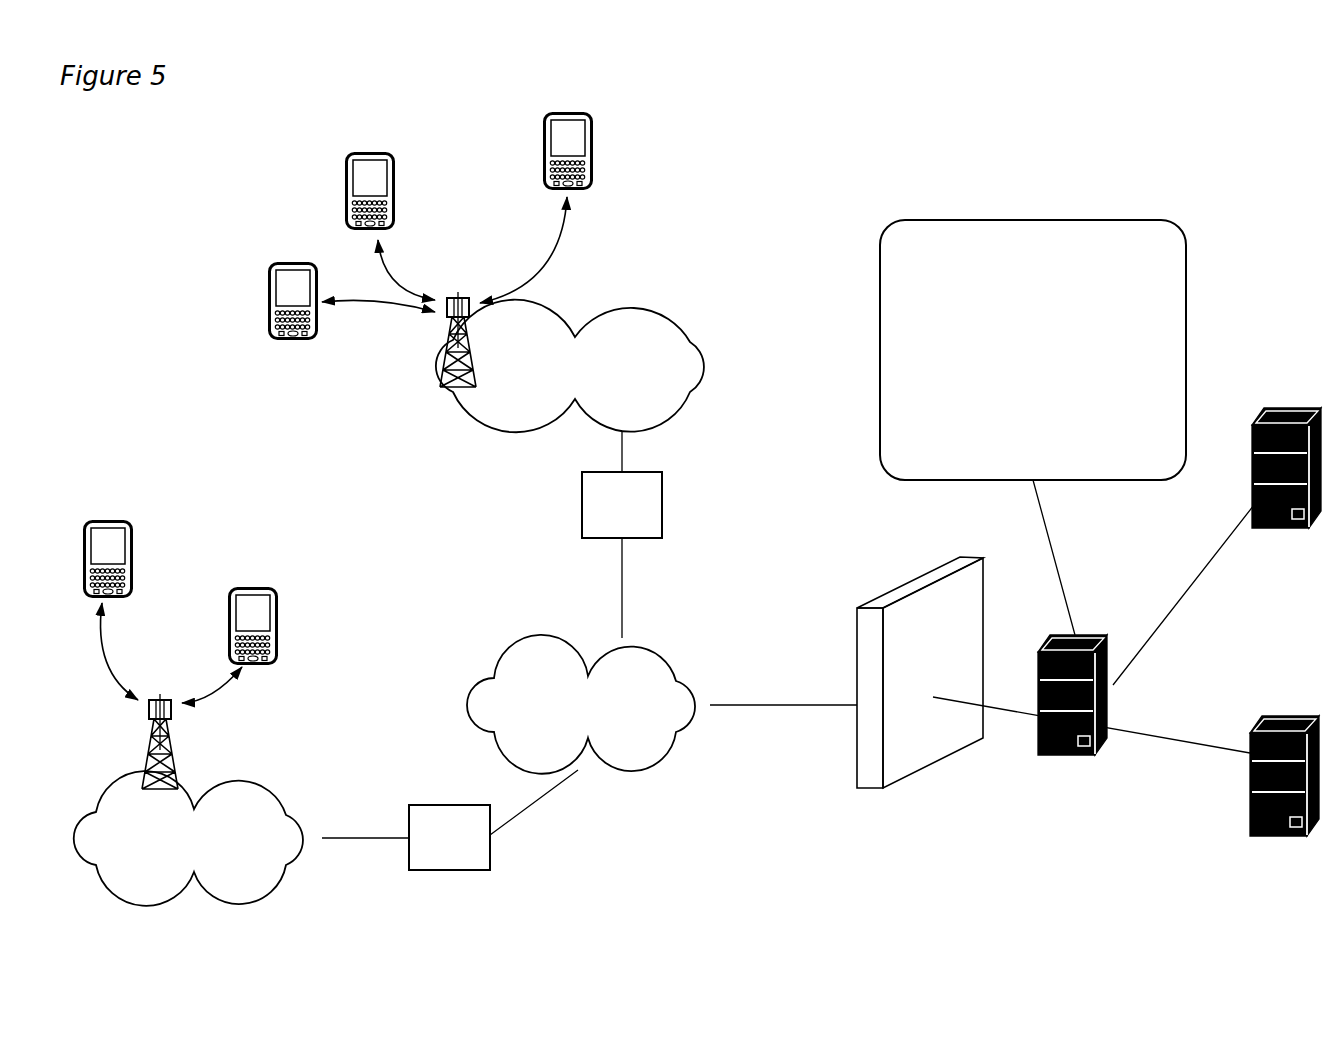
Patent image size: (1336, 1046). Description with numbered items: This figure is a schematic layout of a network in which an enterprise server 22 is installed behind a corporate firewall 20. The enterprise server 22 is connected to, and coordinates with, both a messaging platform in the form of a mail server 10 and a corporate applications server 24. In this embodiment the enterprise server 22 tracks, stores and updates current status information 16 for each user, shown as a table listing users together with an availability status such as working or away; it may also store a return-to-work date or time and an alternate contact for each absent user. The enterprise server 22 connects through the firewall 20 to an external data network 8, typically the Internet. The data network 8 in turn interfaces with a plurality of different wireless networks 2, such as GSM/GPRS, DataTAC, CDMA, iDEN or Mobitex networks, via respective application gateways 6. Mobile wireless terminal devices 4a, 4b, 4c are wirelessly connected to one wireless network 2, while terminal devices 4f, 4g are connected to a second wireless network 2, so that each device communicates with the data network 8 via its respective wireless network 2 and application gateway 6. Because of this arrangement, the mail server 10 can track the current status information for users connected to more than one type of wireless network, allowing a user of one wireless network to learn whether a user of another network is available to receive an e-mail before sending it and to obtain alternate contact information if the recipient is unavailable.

The wireless network 2 is at (735, 367).
The mobile wireless terminal device 4a is at (268, 300).
The mobile wireless terminal device 4b is at (593, 133).
The mobile wireless terminal device 4c is at (345, 195).
The mobile wireless terminal device 4f is at (108, 520).
The mobile wireless terminal device 4g is at (255, 587).
The application gateway 6 is at (662, 503).
The data network 8 is at (550, 638).
The mail server 10 is at (1273, 410).
The current status information 16 is at (1097, 220).
The corporate firewall 20 is at (902, 586).
The enterprise server 22 is at (1045, 645).
The corporate applications server 24 is at (1255, 815).